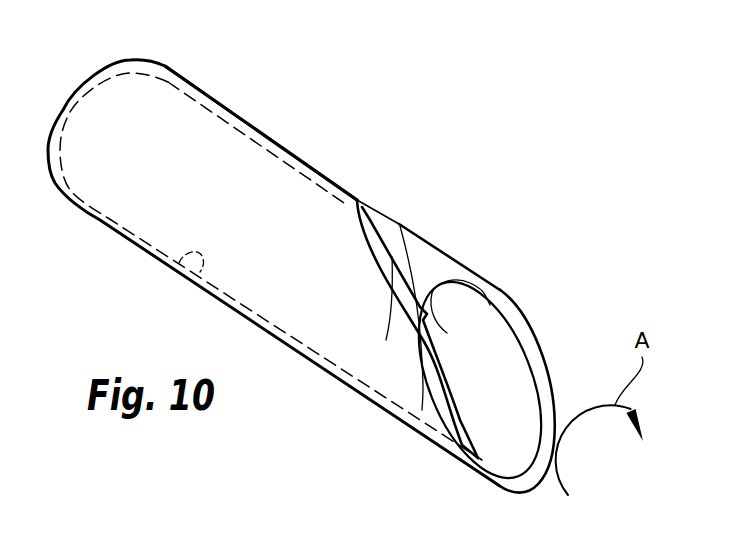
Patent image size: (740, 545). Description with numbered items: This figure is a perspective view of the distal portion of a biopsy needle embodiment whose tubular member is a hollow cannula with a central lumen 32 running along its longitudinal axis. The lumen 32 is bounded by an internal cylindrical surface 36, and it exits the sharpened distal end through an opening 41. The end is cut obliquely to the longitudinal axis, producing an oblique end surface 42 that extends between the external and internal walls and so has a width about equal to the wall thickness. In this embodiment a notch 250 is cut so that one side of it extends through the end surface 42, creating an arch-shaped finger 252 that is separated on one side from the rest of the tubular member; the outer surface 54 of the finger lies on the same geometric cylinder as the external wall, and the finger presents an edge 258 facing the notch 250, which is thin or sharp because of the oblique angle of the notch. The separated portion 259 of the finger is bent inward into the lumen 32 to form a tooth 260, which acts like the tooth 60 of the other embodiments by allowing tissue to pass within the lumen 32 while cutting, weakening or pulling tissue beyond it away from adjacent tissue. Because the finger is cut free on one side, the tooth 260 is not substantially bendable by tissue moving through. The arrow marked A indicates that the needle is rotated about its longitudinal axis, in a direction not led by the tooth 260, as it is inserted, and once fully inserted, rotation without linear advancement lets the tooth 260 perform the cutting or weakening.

The central lumen 32 is at (155, 182).
The internal cylindrical surface 36 is at (188, 278).
The opening 41 is at (507, 358).
The end surface 42 is at (207, 94).
The outer surface 54 is at (418, 257).
The tooth 60 is at (402, 240).
The notch 250 is at (395, 255).
The finger 252 is at (422, 252).
The first side edge 258 is at (386, 340).
The separated portion 259 is at (422, 410).
The tooth 260 is at (447, 333).